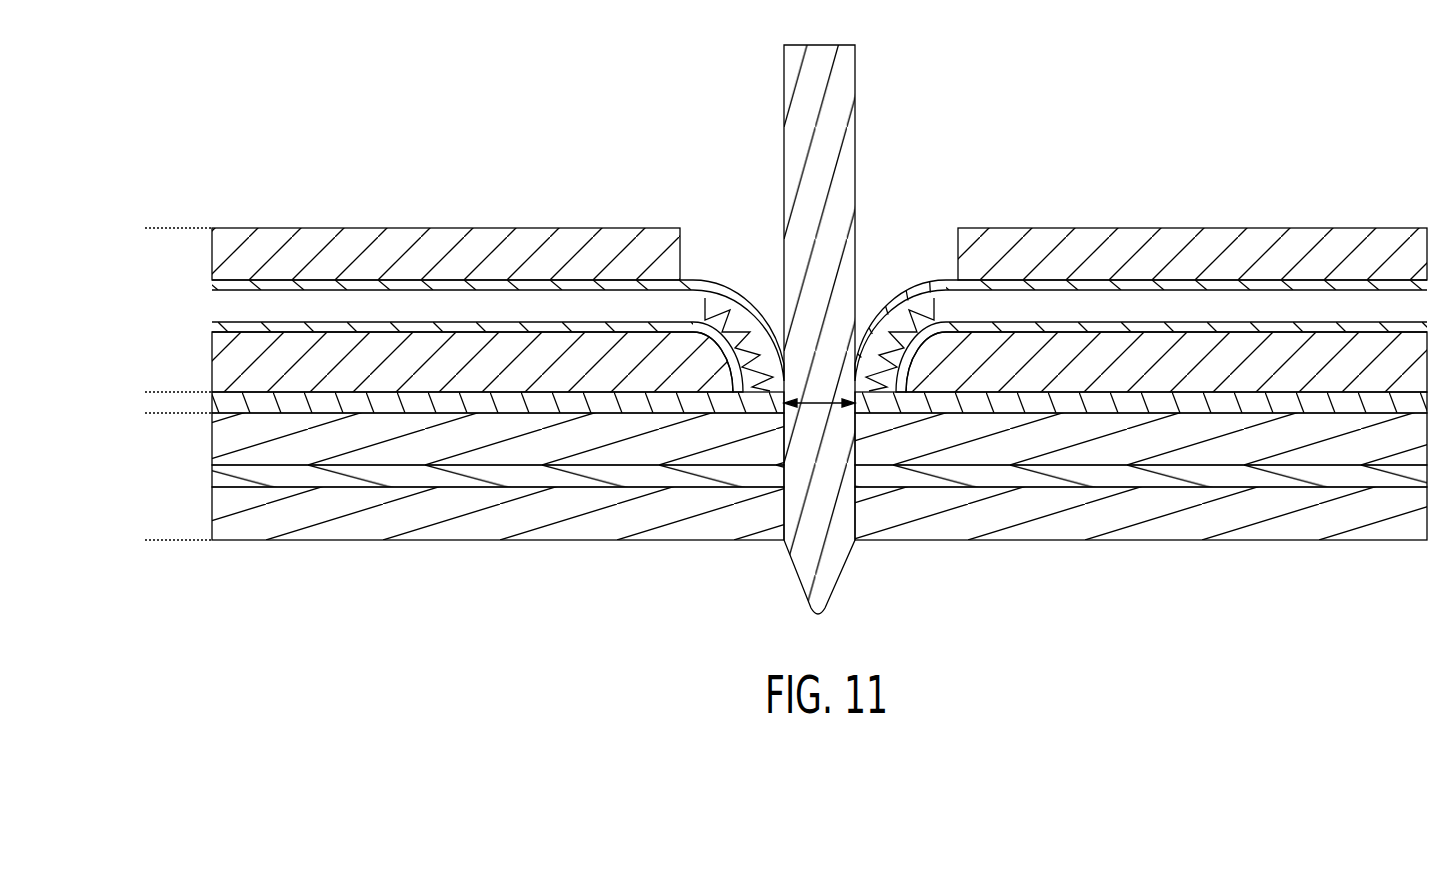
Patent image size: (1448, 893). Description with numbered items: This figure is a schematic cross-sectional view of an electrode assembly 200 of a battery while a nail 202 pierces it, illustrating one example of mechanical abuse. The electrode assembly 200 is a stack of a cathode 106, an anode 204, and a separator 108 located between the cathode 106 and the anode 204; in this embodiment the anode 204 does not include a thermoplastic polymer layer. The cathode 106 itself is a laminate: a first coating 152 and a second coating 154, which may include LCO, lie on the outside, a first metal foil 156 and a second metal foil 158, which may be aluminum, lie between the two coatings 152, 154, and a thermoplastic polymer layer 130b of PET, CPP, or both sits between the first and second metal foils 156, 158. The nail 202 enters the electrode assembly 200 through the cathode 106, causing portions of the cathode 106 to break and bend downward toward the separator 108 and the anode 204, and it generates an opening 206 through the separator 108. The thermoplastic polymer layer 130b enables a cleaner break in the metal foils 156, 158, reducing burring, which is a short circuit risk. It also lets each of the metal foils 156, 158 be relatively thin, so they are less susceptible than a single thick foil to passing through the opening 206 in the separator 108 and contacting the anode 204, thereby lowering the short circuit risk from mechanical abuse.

The electrode assembly 200 is at (292, 140).
The nail 202 is at (855, 143).
The opening 206 is at (820, 396).
The cathode 106 is at (142, 228).
The first coating 152 is at (212, 253).
The first metal foil 156 is at (212, 283).
The thermoplastic polymer layer 130b is at (212, 305).
The second metal foil 158 is at (212, 327).
The second coating 154 is at (212, 350).
The separator 108 is at (210, 403).
The anode 204 is at (142, 420).